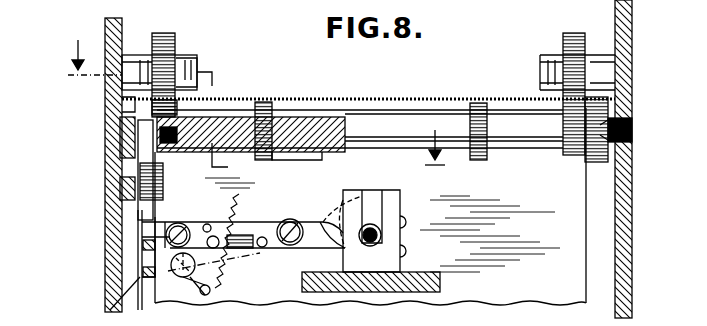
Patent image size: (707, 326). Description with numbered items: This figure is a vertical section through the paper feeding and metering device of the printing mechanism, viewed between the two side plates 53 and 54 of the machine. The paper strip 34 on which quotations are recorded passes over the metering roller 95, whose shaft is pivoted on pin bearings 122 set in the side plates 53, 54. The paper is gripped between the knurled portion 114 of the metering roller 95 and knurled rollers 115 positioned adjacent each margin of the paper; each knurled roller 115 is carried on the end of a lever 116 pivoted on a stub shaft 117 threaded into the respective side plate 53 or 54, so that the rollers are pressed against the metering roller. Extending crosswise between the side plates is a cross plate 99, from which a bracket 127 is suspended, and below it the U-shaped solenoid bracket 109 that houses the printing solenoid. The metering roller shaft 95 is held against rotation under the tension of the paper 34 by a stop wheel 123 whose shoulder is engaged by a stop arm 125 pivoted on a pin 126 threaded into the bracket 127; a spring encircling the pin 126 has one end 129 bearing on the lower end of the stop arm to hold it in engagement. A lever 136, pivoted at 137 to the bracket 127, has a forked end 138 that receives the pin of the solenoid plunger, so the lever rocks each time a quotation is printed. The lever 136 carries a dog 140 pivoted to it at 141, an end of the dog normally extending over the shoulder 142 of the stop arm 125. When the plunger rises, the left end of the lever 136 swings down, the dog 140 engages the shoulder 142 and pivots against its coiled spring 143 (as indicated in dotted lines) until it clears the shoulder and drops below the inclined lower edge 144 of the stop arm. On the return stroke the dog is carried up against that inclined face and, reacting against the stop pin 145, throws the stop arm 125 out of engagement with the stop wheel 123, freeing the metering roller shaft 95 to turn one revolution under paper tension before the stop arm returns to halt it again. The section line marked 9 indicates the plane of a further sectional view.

The section line 9- 9 is at (256, 112).
The paper strip 34 is at (228, 101).
The side plate 53 is at (106, 238).
The side plate 54 is at (633, 187).
The metering roller 95 is at (505, 130).
The cross plate 99 is at (188, 140).
The solenoid bracket 109 is at (440, 280).
The knurled portion 114 is at (160, 112).
The knurled roller 115 is at (177, 43).
The lever 116 is at (150, 58).
The stub shaft 117 is at (196, 62).
The pin bearing 122 is at (107, 148).
The stop wheel 123 is at (132, 99).
The stop arm 125 is at (138, 217).
The pin 126 is at (123, 193).
The bracket 127 is at (163, 178).
The spring end 129 is at (140, 238).
The lever 136 is at (222, 228).
The pivot 137 is at (290, 247).
The forked end 138 is at (406, 250).
The dog 140 is at (167, 223).
The pivot 141 is at (208, 224).
The shoulder 142 is at (143, 250).
The coiled spring 143 is at (246, 240).
The inclined lower edge 144 is at (146, 272).
The stop pin 145 is at (209, 226).